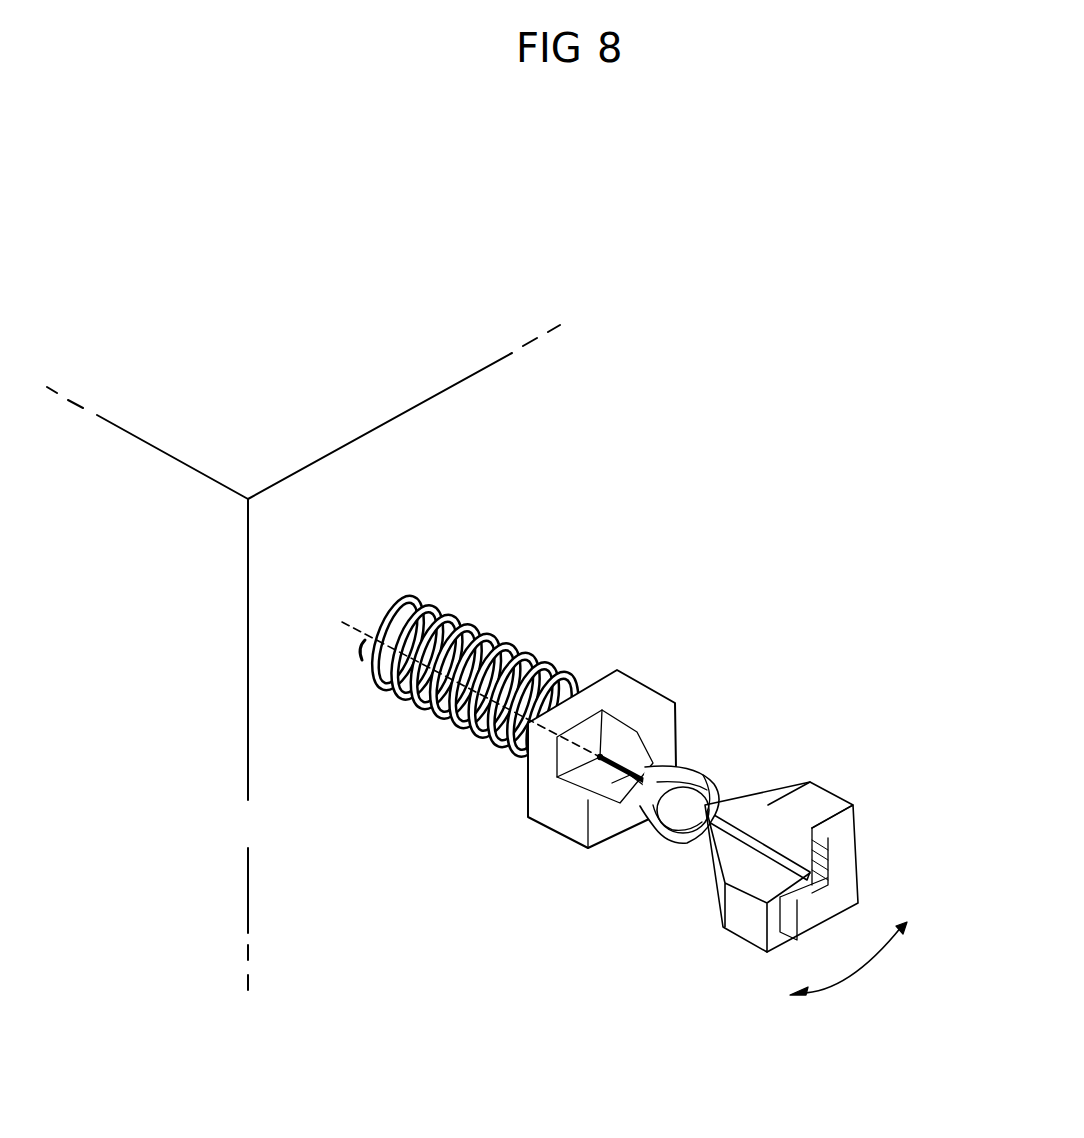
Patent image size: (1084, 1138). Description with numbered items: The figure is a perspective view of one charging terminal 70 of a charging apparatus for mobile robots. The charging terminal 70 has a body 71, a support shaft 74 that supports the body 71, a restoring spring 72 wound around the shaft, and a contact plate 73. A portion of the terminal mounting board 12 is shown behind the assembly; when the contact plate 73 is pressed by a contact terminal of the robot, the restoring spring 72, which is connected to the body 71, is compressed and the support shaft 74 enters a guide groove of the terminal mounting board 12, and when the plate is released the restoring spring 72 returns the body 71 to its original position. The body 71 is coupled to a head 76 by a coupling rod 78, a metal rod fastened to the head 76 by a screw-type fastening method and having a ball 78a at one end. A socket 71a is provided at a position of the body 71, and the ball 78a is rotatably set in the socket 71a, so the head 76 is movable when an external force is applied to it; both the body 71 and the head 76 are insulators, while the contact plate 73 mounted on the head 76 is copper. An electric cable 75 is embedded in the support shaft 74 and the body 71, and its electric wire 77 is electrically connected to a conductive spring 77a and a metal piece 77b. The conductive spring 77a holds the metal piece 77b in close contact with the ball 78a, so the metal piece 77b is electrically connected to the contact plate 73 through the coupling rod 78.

The terminal mounting board 12 is at (410, 434).
The charging terminal 70 is at (653, 585).
The body 71 is at (632, 690).
The socket 71a is at (693, 777).
The restoring spring 72 is at (423, 718).
The contact plate 73 is at (860, 847).
The support shaft 74 is at (370, 665).
The electric cable 75 is at (352, 610).
The head 76 is at (813, 783).
The electric wire 77 is at (600, 758).
The conductive spring 77a is at (612, 785).
The metal piece 77b is at (653, 770).
The coupling rod 78 is at (775, 858).
The ball 78a is at (683, 843).